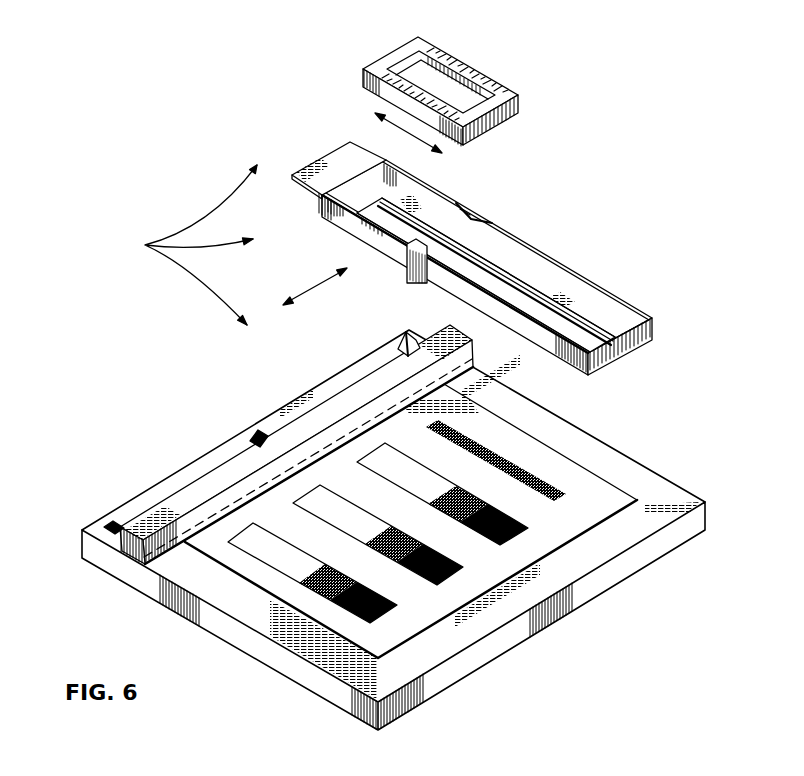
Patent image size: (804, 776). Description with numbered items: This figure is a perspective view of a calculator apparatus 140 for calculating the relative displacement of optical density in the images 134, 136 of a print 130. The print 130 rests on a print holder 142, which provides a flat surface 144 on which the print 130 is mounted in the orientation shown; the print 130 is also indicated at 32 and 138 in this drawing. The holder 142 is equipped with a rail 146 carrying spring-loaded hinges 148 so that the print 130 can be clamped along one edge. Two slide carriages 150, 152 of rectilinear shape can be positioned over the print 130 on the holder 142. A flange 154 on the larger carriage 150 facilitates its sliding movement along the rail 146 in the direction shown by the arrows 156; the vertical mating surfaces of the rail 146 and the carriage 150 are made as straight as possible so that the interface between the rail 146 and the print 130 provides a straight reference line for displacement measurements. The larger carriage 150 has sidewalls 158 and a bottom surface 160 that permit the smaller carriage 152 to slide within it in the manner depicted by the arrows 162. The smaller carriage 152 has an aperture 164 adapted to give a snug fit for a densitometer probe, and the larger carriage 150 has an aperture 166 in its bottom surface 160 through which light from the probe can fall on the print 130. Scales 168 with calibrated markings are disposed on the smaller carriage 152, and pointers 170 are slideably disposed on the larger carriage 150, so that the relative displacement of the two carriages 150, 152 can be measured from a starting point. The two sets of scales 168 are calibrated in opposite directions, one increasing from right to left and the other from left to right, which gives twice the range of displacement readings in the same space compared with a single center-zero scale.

The substrate 32 is at (430, 645).
The print 130 is at (650, 480).
The image 134 is at (405, 618).
The image 136 is at (468, 572).
The recess 138 is at (600, 490).
The apparatus 140 is at (135, 261).
The print holder 142 is at (673, 533).
The flat surface 144 is at (543, 473).
The rail 146 is at (180, 500).
The spring-loaded hinges 148 is at (108, 520).
The slide carriage 150 is at (643, 317).
The slide carriage 152 is at (497, 117).
The flange 154 is at (330, 163).
The arrows 156 is at (318, 282).
The sidewalls 158 is at (563, 280).
The bottom surface 160 is at (500, 257).
The arrows 162 is at (390, 128).
The aperture 164 is at (417, 78).
The aperture 166 is at (517, 293).
The scales 168 is at (462, 62).
The pointers 170 is at (462, 212).